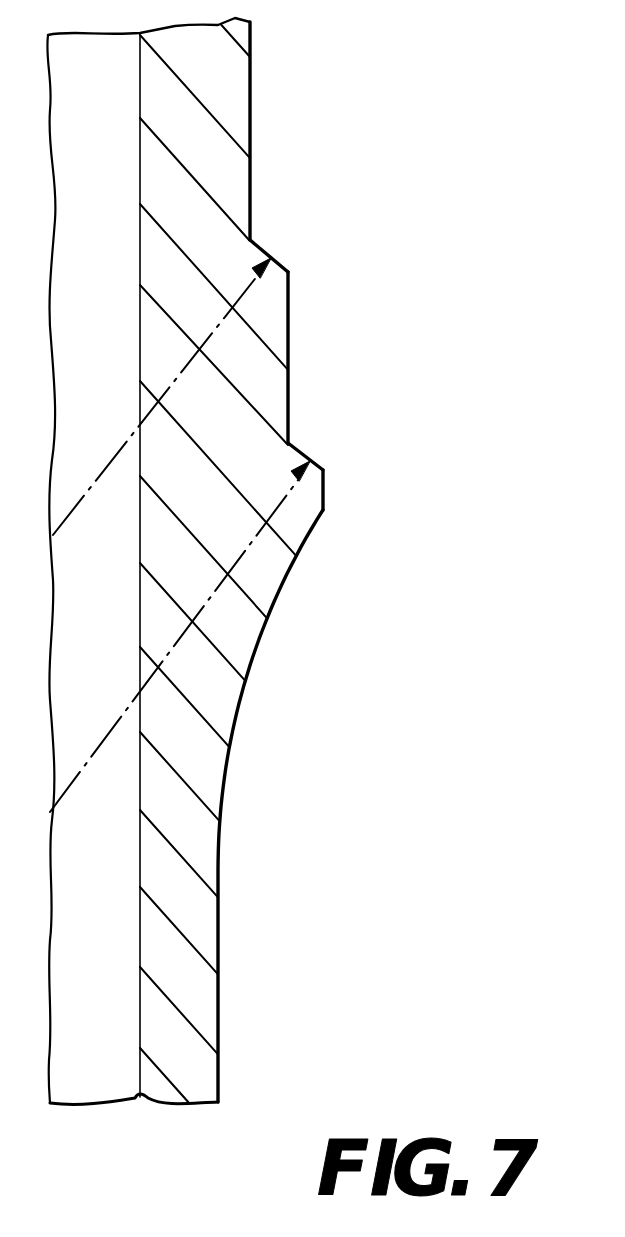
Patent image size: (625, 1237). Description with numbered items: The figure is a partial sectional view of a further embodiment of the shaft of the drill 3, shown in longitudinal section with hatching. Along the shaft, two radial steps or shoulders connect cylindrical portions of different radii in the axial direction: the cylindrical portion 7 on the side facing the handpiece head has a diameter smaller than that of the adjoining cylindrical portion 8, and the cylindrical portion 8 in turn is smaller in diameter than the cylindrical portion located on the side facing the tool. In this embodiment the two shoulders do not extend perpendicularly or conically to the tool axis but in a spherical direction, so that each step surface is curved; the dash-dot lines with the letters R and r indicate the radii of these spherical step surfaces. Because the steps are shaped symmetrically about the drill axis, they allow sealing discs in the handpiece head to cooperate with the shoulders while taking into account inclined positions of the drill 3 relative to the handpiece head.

The drill 3 is at (207, 508).
The cylindrical portion 7 is at (250, 147).
The cylindrical portion 8 is at (351, 357).
The radius R is at (73, 508).
The radius r is at (77, 773).